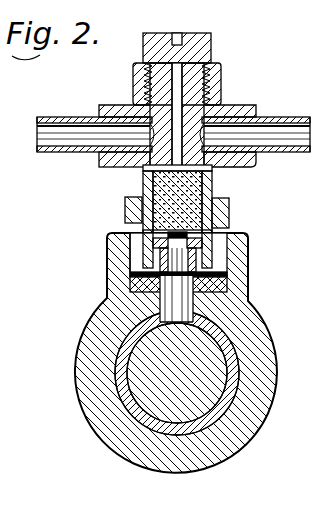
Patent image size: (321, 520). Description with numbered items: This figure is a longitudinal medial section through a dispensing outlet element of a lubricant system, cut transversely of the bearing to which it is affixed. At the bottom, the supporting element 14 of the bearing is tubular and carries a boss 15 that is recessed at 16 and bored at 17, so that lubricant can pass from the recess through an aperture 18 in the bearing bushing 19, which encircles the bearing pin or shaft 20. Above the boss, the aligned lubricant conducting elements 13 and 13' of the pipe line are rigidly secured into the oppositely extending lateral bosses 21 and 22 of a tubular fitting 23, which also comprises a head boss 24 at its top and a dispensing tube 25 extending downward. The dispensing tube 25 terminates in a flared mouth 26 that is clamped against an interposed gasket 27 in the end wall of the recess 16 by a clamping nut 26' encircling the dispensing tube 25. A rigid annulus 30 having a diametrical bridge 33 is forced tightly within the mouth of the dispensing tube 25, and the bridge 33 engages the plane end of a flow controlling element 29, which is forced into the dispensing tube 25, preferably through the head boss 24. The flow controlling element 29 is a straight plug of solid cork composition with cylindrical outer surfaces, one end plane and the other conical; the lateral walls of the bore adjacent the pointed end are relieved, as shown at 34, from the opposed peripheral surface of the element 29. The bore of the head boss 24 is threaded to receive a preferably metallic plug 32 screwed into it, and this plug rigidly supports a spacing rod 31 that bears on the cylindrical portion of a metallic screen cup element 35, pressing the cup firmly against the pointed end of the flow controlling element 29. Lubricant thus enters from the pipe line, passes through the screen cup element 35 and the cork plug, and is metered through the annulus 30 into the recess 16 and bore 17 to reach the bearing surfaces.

The lubricant conducting element 13 is at (95, 121).
The lubricant conducting element 13' is at (255, 123).
The supporting element of a bearing 14 is at (105, 322).
The boss 15 is at (249, 247).
The recess 16 is at (230, 272).
The bore 17 is at (148, 300).
The aperture 18 is at (184, 315).
The bearing bushing 19 is at (117, 356).
The bearing pin or shaft 20 is at (203, 358).
The lateral boss 21 is at (110, 104).
The lateral boss 22 is at (232, 106).
The tubular fitting 23 is at (211, 176).
The head boss 24 is at (140, 78).
The dispensing tube 25 is at (129, 233).
The flared mouth 26 is at (135, 251).
The clamping nut 26' is at (221, 200).
The gasket 27 is at (222, 284).
The flow controlling element 29 is at (172, 208).
The rigid annulus 30 is at (244, 236).
The spacing rod 31 is at (210, 70).
The plug 32 is at (206, 47).
The diametrical bridge 33 is at (230, 217).
The relieved bore wall 34 is at (148, 185).
The screen cup element 35 is at (144, 172).